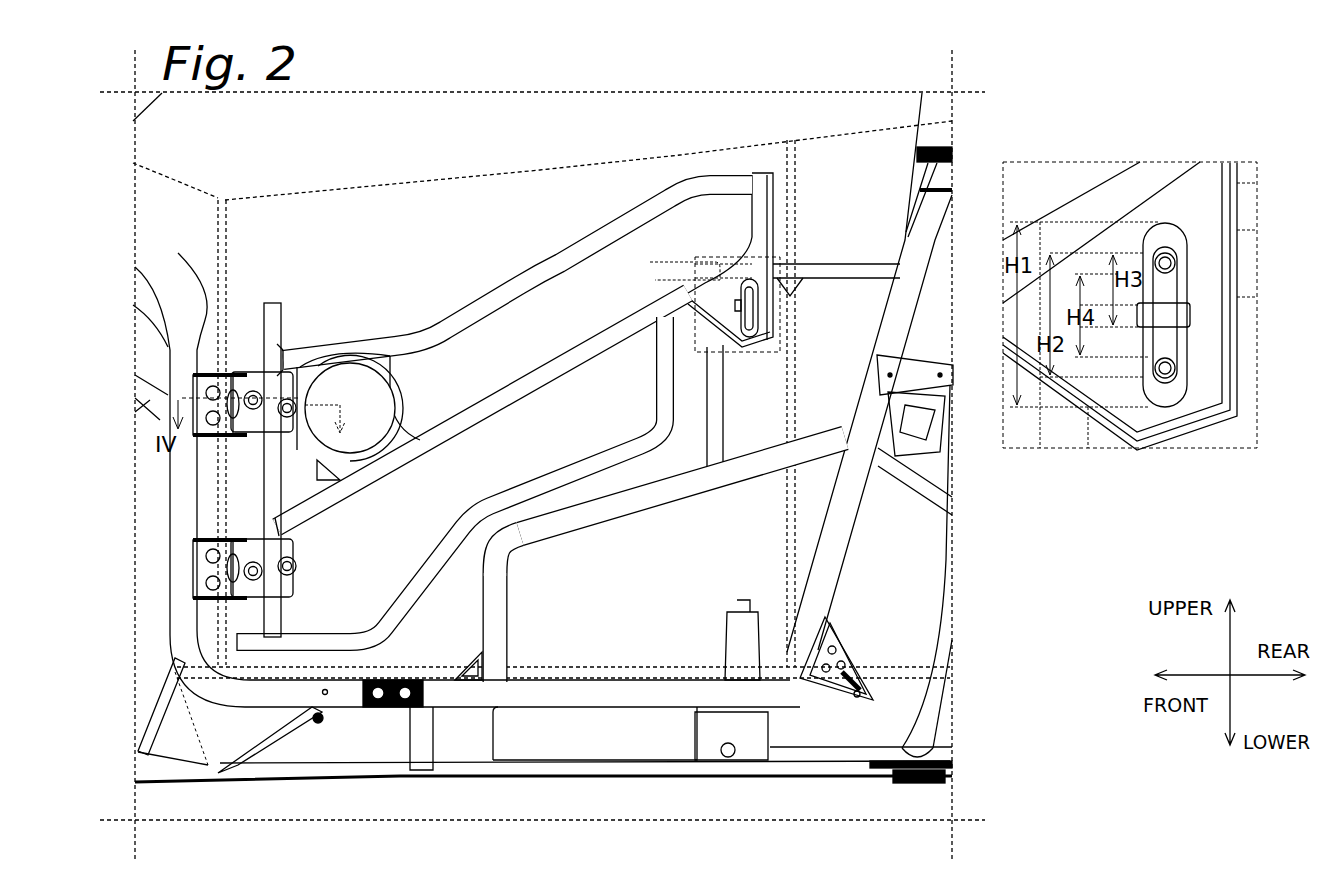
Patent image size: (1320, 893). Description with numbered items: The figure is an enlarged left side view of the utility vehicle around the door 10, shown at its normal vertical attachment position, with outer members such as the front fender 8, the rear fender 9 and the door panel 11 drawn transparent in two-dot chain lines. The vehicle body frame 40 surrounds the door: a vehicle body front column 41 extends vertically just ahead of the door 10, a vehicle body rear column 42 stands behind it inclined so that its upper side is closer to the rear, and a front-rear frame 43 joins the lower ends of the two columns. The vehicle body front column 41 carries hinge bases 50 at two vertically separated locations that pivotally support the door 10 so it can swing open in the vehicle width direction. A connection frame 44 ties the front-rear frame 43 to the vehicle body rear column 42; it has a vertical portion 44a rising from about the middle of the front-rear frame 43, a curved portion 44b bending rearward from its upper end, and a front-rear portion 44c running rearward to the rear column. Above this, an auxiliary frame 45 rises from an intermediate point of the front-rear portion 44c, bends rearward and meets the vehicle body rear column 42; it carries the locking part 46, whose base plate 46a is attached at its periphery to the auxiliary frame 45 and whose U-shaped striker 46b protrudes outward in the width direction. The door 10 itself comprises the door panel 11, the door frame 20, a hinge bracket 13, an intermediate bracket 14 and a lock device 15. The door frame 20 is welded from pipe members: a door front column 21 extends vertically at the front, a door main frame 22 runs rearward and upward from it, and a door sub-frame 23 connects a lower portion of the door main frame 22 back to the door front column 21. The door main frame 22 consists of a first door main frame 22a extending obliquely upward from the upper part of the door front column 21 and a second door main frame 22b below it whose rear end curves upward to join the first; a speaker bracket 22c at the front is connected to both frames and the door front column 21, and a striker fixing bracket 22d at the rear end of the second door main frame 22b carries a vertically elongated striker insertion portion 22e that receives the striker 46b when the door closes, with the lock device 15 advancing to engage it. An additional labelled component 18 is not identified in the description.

The front fender 8 is at (180, 178).
The rear fender 9 is at (860, 128).
The door 10 is at (368, 170).
The door panel 11 is at (540, 170).
The hinge bracket 13 is at (263, 372).
The intermediate bracket 14 is at (260, 447).
The lock device 15 is at (1187, 343).
The front bracket 18 is at (280, 372).
The door frame 20 is at (425, 293).
The door front column 21 is at (273, 297).
The door main frame 22 is at (533, 267).
The first door main frame 22a is at (605, 228).
The second door main frame 22b is at (540, 388).
The speaker bracket 22c is at (403, 387).
The striker fixing bracket 22d is at (760, 357).
The striker insertion portion 22e is at (1170, 223).
The door sub-frame 23 is at (455, 530).
The vehicle body frame 40 is at (952, 637).
The vehicle body front column 41 is at (207, 323).
The vehicle body rear column 42 is at (850, 517).
The front-rear frame 43 is at (563, 697).
The connection frame 44 is at (670, 560).
The vertical portion 44a is at (540, 628).
The curved portion 44b is at (510, 555).
The front-rear portion 44c is at (560, 537).
The auxiliary frame 45 is at (807, 270).
The locking part 46 is at (1003, 237).
The base plate 46a is at (1247, 270).
The striker 46b is at (1188, 283).
The hinge bases 50 is at (200, 533).